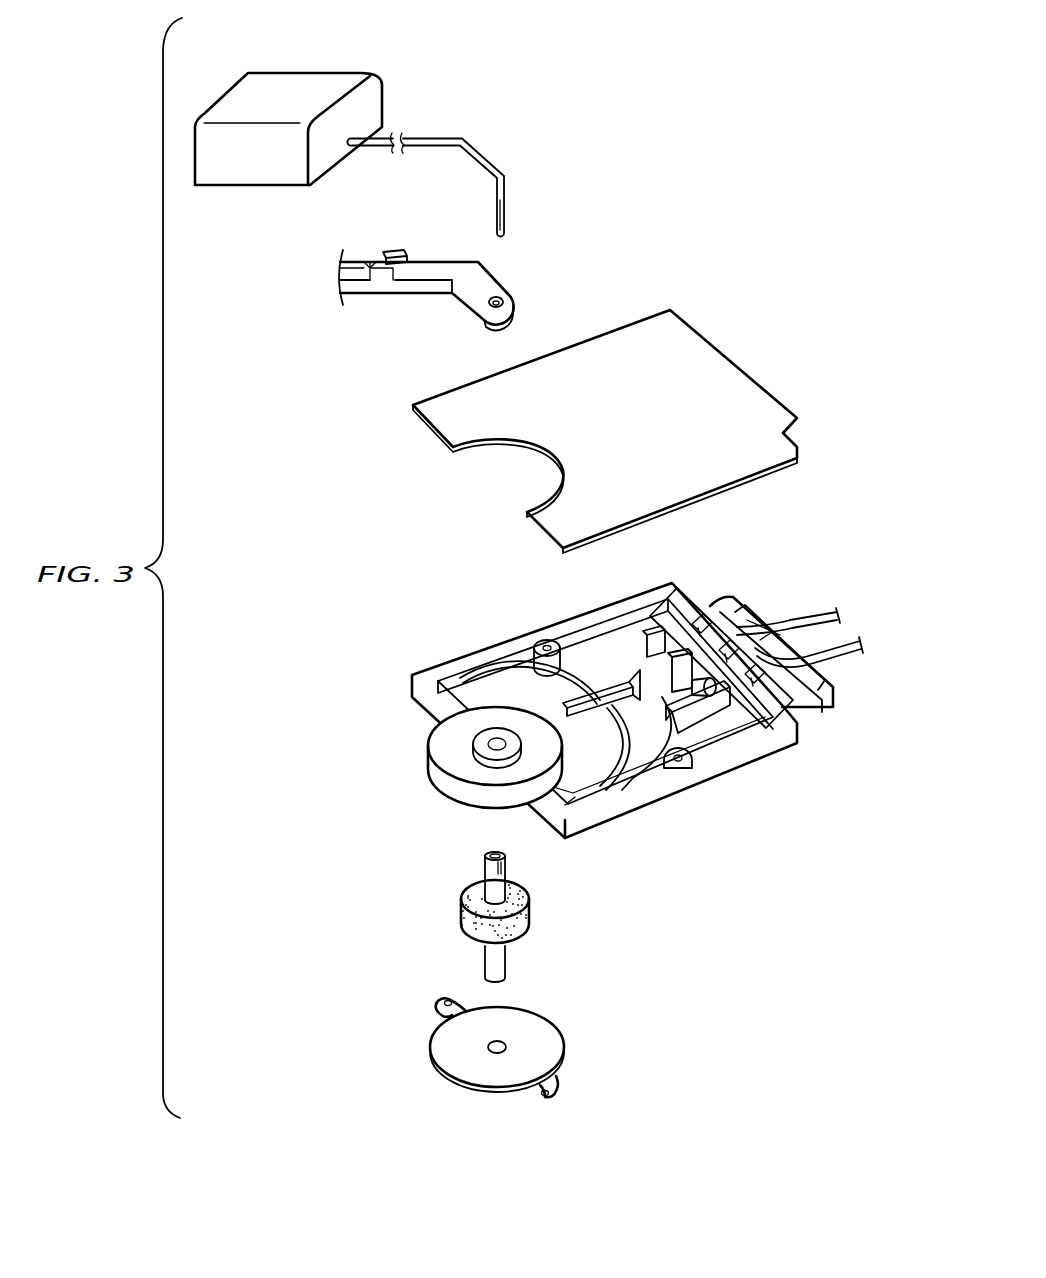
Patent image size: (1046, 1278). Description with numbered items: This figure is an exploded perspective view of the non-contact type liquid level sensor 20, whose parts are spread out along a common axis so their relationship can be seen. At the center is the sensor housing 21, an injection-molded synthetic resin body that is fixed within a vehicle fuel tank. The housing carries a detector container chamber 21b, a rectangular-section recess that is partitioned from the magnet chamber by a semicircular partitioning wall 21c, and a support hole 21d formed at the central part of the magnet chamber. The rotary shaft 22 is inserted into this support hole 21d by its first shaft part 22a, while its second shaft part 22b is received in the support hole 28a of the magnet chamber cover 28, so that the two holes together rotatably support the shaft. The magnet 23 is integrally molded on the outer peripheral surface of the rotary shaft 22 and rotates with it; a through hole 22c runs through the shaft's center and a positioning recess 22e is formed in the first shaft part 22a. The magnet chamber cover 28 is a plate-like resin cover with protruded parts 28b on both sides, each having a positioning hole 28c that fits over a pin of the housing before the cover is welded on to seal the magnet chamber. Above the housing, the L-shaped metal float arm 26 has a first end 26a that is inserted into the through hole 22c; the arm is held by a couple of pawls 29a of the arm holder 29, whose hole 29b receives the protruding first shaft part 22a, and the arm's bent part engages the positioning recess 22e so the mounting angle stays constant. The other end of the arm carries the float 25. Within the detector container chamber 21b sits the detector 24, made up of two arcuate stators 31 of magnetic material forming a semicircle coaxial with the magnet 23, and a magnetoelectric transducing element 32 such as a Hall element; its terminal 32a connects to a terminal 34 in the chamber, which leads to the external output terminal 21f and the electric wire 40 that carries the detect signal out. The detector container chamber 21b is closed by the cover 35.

The non-contact type liquid level sensor 20 is at (812, 279).
The sensor housing 21 is at (602, 820).
The detector container chamber 21b is at (665, 743).
The partitioning wall 21c is at (507, 672).
The support hole 21d is at (497, 745).
The external output terminal 21f is at (752, 620).
The rotary shaft 22 is at (475, 906).
The first shaft part 22a is at (483, 873).
The second shaft part 22b is at (485, 955).
The through hole 22c is at (490, 855).
The positioning recess 22e is at (505, 867).
The magnet 23 is at (462, 923).
The detector 24 is at (543, 672).
The float 25 is at (316, 71).
The float arm 26 is at (427, 139).
The first end 26a is at (506, 204).
The magnet chamber cover 28 is at (490, 1057).
The support hole 28a is at (493, 1045).
The protruded parts 28b is at (438, 1008).
The positioning holes 28c is at (445, 1002).
The arm holder 29 is at (378, 287).
The pawls 29a is at (383, 256).
The hole 29b is at (499, 300).
The stators 31 is at (493, 703).
The magnetoelectric transducing element 32 is at (682, 788).
The terminal 32a is at (593, 688).
The terminal 34 is at (660, 635).
The cover 35 is at (743, 366).
The electric wire 40 is at (820, 612).